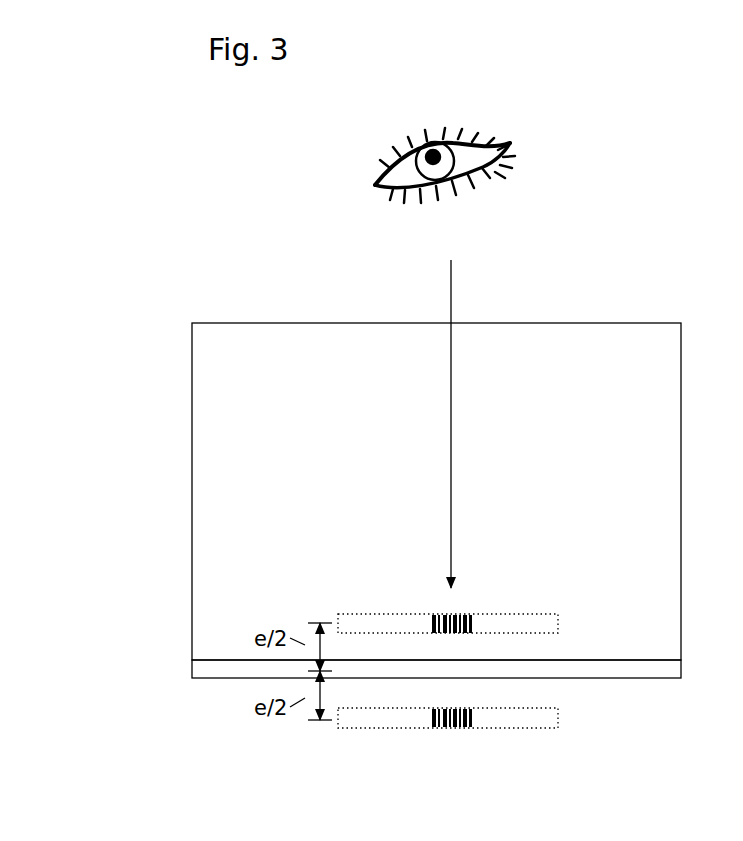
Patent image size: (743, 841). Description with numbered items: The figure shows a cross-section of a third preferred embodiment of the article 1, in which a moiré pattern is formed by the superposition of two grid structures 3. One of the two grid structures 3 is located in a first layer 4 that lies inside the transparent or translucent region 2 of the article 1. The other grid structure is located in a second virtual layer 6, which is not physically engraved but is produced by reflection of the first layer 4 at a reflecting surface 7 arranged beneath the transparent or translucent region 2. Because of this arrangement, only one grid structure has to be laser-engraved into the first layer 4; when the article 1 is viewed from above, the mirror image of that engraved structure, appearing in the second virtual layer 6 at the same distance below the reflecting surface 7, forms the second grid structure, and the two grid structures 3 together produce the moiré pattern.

The article 1 is at (630, 277).
The transparent or translucent region 2 is at (223, 543).
The grid structures 3 is at (463, 695).
The first layer 4 is at (545, 622).
The second virtual layer 6 is at (545, 720).
The reflecting surface 7 is at (630, 668).